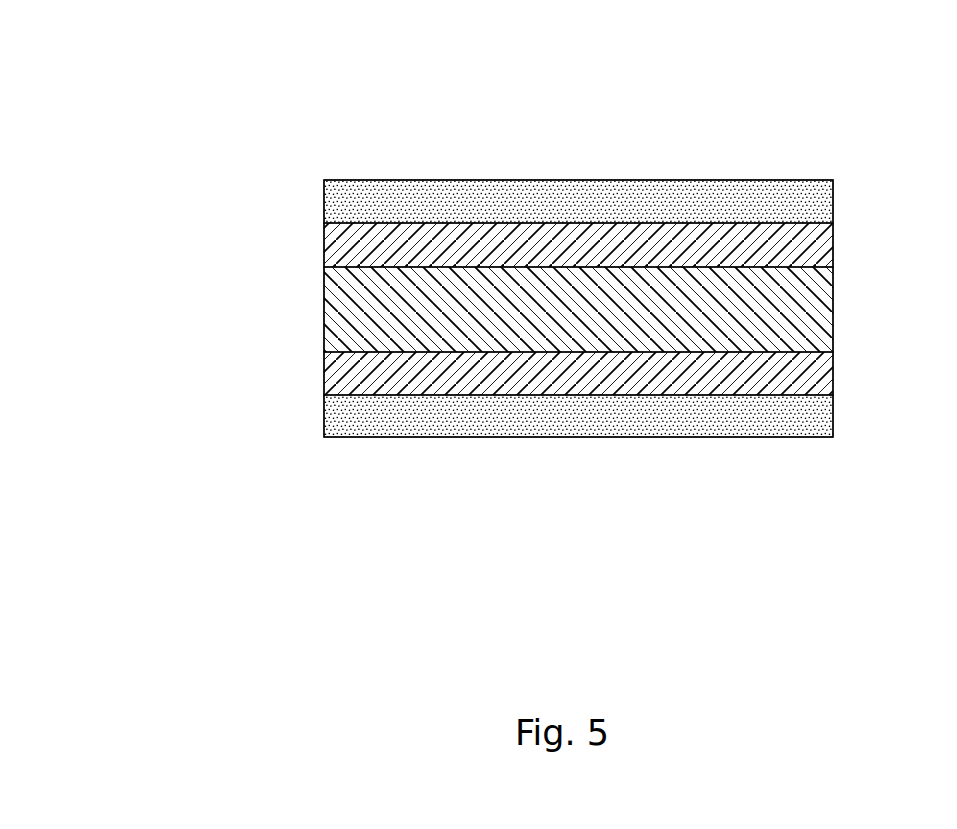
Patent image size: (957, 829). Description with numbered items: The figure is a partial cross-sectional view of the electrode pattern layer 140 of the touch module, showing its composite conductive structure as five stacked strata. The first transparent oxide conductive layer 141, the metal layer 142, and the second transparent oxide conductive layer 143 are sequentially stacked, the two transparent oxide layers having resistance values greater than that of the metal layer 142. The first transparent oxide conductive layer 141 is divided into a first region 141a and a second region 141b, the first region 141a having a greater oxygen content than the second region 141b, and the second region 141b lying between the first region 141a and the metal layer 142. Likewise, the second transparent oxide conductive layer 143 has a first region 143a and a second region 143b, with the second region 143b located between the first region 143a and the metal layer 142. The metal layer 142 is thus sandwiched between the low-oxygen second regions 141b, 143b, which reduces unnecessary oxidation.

The electrode pattern layer 140 is at (887, 65).
The first transparent oxide conductive layer 141 is at (504, 398).
The first region of the first transparent oxide conductive layer 141a is at (329, 416).
The second region of the first transparent oxide conductive layer 141b is at (329, 372).
The metal layer 142 is at (326, 307).
The second transparent oxide conductive layer 143 is at (504, 225).
The first region of the second transparent oxide conductive layer 143a is at (330, 200).
The second region of the second transparent oxide conductive layer 143b is at (330, 243).